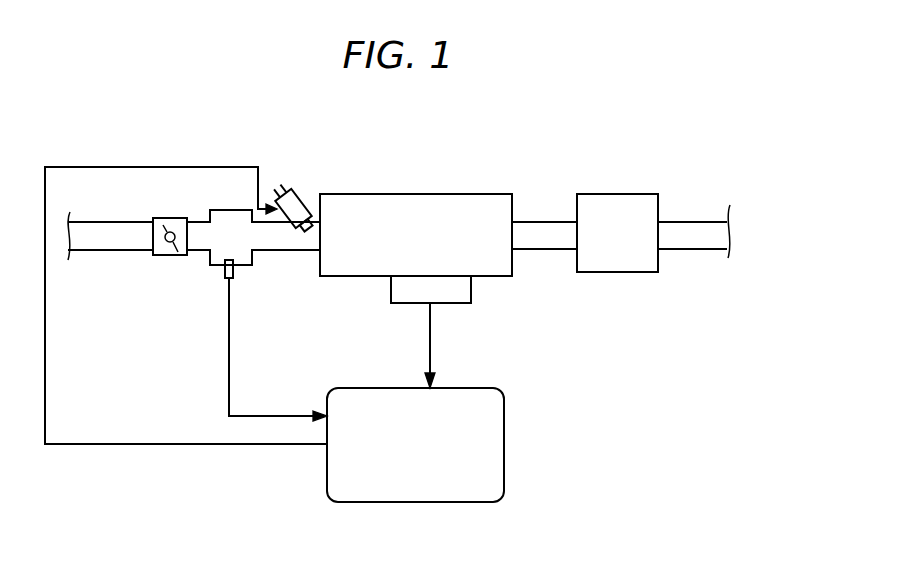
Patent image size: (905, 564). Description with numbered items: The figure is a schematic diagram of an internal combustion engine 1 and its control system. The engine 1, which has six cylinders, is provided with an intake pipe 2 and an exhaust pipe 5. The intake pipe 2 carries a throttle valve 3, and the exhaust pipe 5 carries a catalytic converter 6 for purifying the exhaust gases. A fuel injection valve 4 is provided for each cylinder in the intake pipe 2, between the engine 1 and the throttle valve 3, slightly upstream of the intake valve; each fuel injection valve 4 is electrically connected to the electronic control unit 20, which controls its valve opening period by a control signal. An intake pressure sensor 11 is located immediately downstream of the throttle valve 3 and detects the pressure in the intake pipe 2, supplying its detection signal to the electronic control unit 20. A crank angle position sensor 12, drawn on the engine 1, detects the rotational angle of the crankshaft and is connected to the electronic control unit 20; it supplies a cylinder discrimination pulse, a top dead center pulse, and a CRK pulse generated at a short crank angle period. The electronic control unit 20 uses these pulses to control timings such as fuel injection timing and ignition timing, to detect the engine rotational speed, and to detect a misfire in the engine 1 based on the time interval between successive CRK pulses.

The internal combustion engine 1 is at (395, 194).
The intake pipe 2 is at (83, 222).
The throttle valve 3 is at (167, 231).
The fuel injection valve 4 is at (297, 191).
The exhaust pipe 5 is at (551, 222).
The catalytic converter 6 is at (636, 194).
The intake pressure sensor 11 is at (228, 282).
The crank angle position sensor 12 is at (443, 305).
The electronic control unit 20 is at (350, 388).